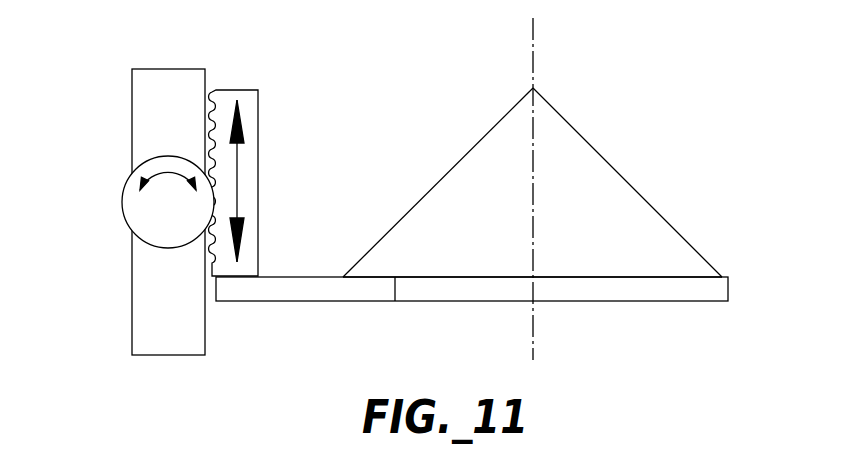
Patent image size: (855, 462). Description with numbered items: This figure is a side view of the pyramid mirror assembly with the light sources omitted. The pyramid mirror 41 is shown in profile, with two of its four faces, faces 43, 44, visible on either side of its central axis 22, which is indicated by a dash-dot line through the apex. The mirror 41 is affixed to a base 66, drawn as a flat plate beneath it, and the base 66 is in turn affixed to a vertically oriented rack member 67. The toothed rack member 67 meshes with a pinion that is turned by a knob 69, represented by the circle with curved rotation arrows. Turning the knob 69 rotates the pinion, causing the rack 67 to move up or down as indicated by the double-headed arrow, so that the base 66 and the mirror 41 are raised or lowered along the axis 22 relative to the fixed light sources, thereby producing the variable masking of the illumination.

The axis 22 is at (531, 62).
The pyramid mirror 41 is at (607, 162).
The face 43 is at (588, 260).
The face 44 is at (449, 260).
The base 66 is at (655, 293).
The rack member 67 is at (250, 182).
The knob 69 is at (132, 210).